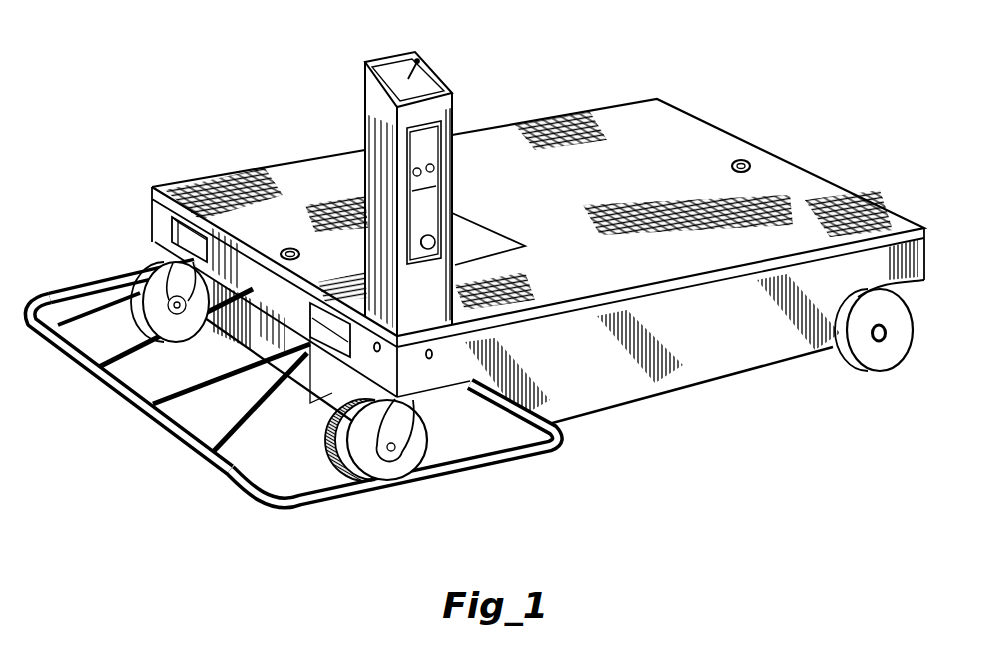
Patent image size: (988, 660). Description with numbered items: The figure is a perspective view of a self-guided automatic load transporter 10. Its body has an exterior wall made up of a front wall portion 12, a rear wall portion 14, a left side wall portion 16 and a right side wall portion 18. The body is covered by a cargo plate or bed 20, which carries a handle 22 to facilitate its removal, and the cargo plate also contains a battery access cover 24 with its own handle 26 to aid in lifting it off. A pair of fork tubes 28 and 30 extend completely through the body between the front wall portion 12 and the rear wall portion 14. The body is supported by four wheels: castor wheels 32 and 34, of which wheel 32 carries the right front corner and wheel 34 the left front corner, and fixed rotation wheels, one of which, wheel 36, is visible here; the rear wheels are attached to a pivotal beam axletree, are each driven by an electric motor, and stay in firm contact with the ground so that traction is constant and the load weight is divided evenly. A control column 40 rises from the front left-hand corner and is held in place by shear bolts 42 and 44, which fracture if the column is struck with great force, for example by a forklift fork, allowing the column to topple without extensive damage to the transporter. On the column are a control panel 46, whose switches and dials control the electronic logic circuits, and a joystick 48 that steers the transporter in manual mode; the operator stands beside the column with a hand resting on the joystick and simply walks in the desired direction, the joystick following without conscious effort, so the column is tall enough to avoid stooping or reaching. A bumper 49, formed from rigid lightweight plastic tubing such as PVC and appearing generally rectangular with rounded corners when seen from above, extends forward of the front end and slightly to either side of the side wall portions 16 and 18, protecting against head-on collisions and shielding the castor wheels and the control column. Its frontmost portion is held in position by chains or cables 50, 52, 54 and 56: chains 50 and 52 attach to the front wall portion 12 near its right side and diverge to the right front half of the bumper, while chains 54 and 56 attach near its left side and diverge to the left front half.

The self-guided automatic load transporter 10 is at (586, 92).
The front wall portion 12 is at (253, 293).
The rear wall portion 14 is at (828, 186).
The left side wall portion 16 is at (688, 382).
The right side wall portion 18 is at (536, 122).
The cargo plate or bed 20 is at (648, 169).
The handle 22 is at (732, 165).
The battery access cover 24 is at (474, 227).
The handle 26 is at (300, 255).
The fork tube 28 is at (168, 236).
The fork tube 30 is at (333, 396).
The castor wheel 32 is at (158, 264).
The castor wheel 34 is at (375, 471).
The fixed rotation wheel 36 is at (881, 344).
The control column 40 is at (367, 130).
The shear bolt 42 is at (431, 359).
The shear bolt 44 is at (376, 352).
The control panel 46 is at (441, 188).
The joystick 48 is at (419, 72).
The bumper 49 is at (128, 404).
The chain or cable 50 is at (70, 353).
The chain or cable 52 is at (97, 373).
The chain or cable 54 is at (207, 383).
The chain or cable 56 is at (258, 410).